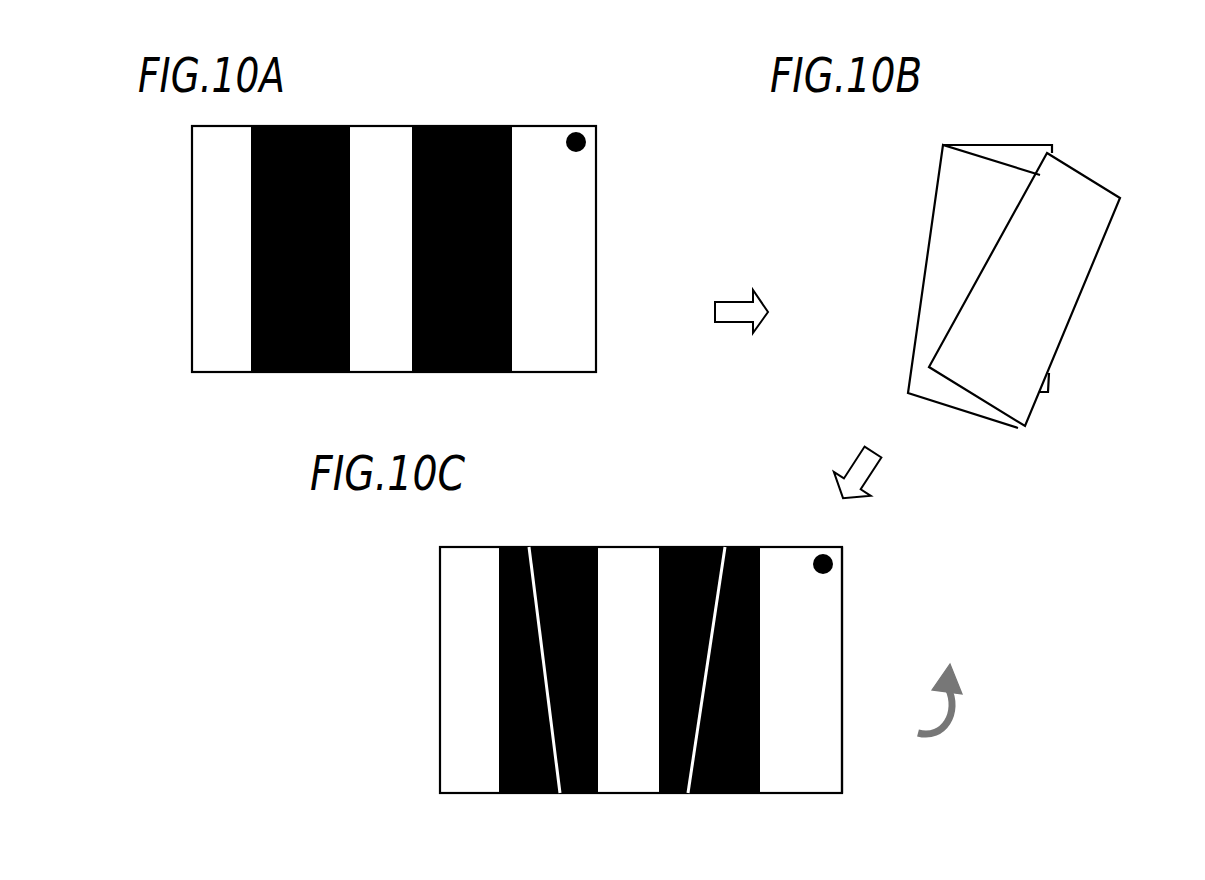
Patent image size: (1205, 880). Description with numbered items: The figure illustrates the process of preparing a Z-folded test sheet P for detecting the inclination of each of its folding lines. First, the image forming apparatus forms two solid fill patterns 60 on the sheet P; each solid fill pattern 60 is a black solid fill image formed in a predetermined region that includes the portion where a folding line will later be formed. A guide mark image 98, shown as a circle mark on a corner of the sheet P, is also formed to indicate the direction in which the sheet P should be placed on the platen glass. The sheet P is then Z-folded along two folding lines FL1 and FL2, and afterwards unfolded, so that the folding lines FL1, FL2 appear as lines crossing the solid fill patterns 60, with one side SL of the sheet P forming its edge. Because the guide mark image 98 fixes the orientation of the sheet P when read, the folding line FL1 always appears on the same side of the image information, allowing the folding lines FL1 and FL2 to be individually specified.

In FIG. 10A, the test sheet P is at (596, 283).
In FIG. 10B, the test sheet P is at (968, 412).
In FIG. 10C, the test sheet P is at (440, 712).
In FIG. 10A, the solid fill pattern 60 is at (350, 352).
In FIG. 10C, the solid fill pattern 60 is at (598, 778).
In FIG. 10A, the guide mark image 98 is at (584, 140).
In FIG. 10C, the guide mark image 98 is at (831, 560).
In FIG. 10B, the folding line FL1 is at (922, 275).
In FIG. 10C, the folding line FL1 is at (725, 547).
In FIG. 10B, the folding line FL2 is at (1082, 295).
In FIG. 10C, the folding line FL2 is at (529, 547).
In FIG. 10C, the one side of the sheet SL is at (842, 750).